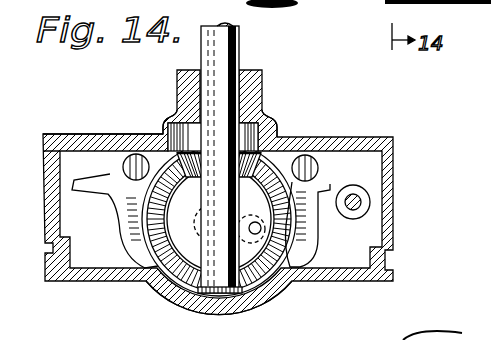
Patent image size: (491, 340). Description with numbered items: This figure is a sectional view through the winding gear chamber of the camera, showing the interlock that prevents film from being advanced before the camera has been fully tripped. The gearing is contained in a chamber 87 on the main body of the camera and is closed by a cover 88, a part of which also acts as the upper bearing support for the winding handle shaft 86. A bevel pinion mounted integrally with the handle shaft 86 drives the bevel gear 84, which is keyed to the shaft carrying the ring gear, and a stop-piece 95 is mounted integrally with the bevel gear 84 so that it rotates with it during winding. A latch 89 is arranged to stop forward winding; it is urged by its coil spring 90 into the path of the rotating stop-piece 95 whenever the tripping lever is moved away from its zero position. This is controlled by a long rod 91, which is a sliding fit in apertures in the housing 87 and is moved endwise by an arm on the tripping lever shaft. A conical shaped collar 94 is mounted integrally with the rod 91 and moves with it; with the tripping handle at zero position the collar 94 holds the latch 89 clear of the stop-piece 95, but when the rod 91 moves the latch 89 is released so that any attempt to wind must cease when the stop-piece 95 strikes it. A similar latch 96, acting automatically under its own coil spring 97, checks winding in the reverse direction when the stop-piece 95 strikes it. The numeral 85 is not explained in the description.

The bevel gear 84 is at (265, 163).
The bearing boss 85 is at (247, 121).
The winding handle shaft 86 is at (234, 53).
The chamber 87 is at (394, 160).
The cover 88 is at (53, 134).
The latch 89 is at (308, 235).
The coil spring 90 is at (322, 160).
The rod 91 is at (364, 193).
The conical shaped collar 94 is at (362, 210).
The stop-piece 95 is at (288, 270).
The latch 96 is at (137, 247).
The coil spring 97 is at (120, 176).